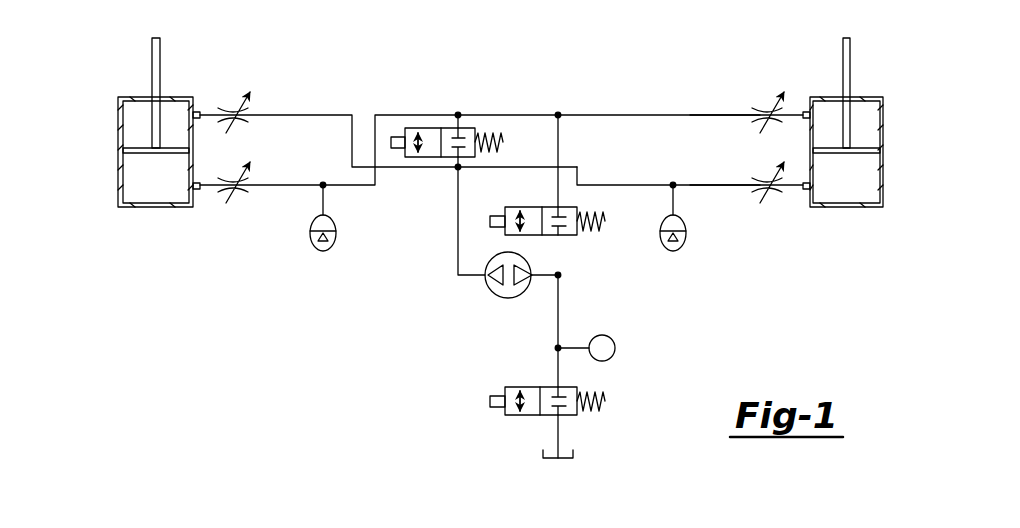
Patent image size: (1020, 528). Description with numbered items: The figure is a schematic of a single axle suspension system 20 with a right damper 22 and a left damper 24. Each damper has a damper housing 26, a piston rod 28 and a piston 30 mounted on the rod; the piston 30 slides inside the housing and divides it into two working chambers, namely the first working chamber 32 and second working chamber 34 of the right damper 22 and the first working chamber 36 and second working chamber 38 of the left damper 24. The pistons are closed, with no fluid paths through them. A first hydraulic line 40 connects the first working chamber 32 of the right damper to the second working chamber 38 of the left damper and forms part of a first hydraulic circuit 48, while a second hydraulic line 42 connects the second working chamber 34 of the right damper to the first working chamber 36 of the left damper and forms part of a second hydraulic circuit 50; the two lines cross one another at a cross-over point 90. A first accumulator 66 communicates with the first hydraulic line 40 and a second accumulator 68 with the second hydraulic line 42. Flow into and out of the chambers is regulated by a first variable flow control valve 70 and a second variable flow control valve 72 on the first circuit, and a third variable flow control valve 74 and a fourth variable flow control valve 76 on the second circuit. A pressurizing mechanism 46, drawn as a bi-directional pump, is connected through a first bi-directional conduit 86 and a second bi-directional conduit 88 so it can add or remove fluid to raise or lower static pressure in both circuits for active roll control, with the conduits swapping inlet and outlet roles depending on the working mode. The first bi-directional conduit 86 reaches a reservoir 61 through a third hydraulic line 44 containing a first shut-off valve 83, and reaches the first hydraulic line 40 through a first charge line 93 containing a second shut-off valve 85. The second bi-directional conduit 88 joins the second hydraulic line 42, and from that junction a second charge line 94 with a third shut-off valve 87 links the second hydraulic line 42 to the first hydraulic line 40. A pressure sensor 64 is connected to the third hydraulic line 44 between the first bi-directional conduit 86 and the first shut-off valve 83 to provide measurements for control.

The single axle suspension system 20 is at (382, 325).
The right damper 22 is at (883, 144).
The left damper 24 is at (129, 147).
The damper housing 26 is at (118, 170).
The piston rod 28 is at (152, 45).
The piston 30 is at (135, 148).
The first working chamber of the right damper 32 is at (828, 113).
The second working chamber of the right damper 34 is at (862, 188).
The first working chamber of the left damper 36 is at (180, 113).
The second working chamber of the left damper 38 is at (147, 188).
The first hydraulic line 40 is at (693, 113).
The second hydraulic line 42 is at (715, 183).
The third hydraulic line 44 is at (560, 433).
The pressurizing mechanism 46 is at (495, 293).
The first hydraulic circuit 48 is at (608, 113).
The second hydraulic circuit 50 is at (602, 183).
The reservoir 61 is at (540, 460).
The pressure sensor 64 is at (615, 348).
The first accumulator 66 is at (318, 248).
The second accumulator 68 is at (680, 248).
The first variable flow control valve 70 is at (760, 110).
The second variable flow control valve 72 is at (240, 190).
The third variable flow control valve 74 is at (775, 192).
The fourth variable flow control valve 76 is at (231, 110).
The first shut-off valve 83 is at (510, 415).
The second shut-off valve 85 is at (570, 235).
The first bi-directional conduit 86 is at (545, 277).
The third shut-off valve 87 is at (412, 128).
The second bi-directional conduit 88 is at (458, 252).
The cross-over point 90 is at (380, 173).
The first charge line 93 is at (560, 137).
The second charge line 94 is at (462, 120).